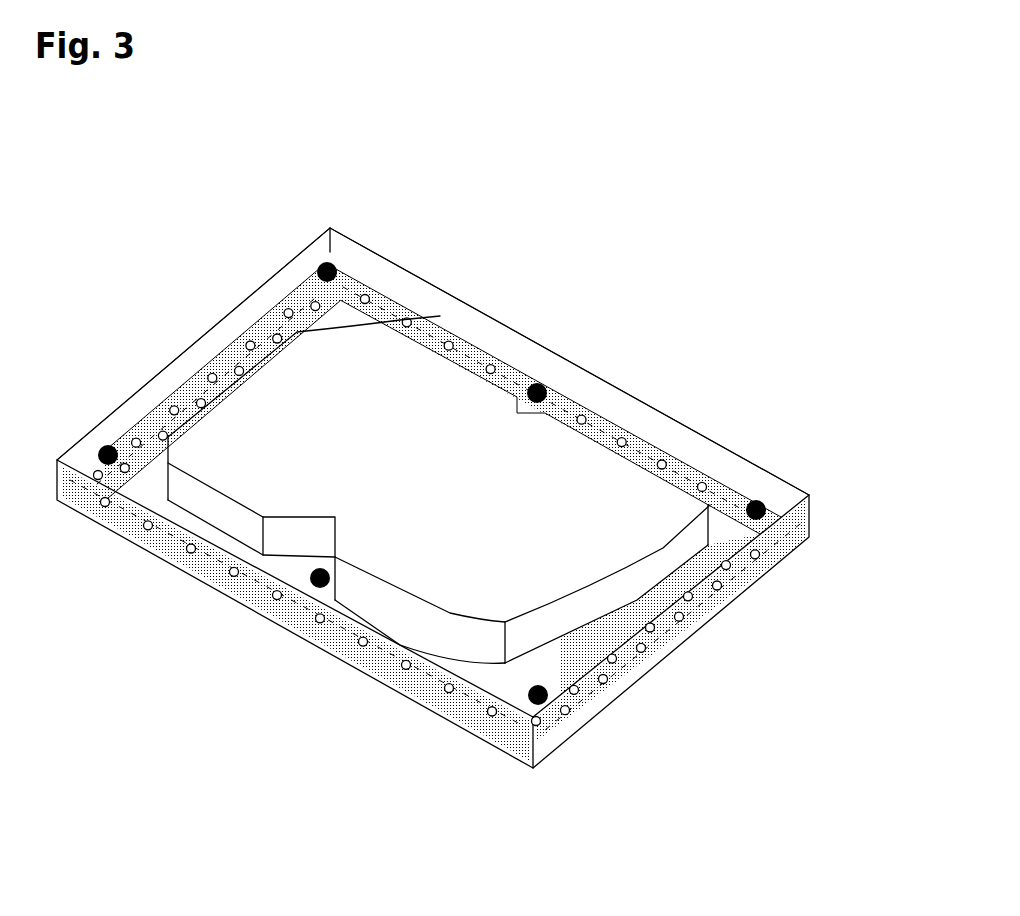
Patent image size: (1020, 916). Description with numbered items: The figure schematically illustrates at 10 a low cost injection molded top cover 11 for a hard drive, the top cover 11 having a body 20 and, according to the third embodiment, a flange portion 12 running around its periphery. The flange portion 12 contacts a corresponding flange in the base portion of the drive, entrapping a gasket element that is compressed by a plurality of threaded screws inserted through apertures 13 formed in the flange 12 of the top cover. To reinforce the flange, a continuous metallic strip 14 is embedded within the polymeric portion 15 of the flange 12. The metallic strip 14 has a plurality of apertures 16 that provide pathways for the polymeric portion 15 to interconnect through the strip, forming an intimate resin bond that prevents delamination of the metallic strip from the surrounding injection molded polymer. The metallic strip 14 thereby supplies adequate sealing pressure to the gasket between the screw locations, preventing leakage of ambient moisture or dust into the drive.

The schematic overview of injection molded top cover 10 is at (539, 243).
The top cover 11 is at (537, 474).
The flange portion 12 is at (500, 338).
The apertures 13 is at (486, 694).
The metallic strip 14 is at (313, 613).
The polymeric portion 15 is at (762, 483).
The apertures 16 is at (407, 667).
The body 20 is at (611, 608).